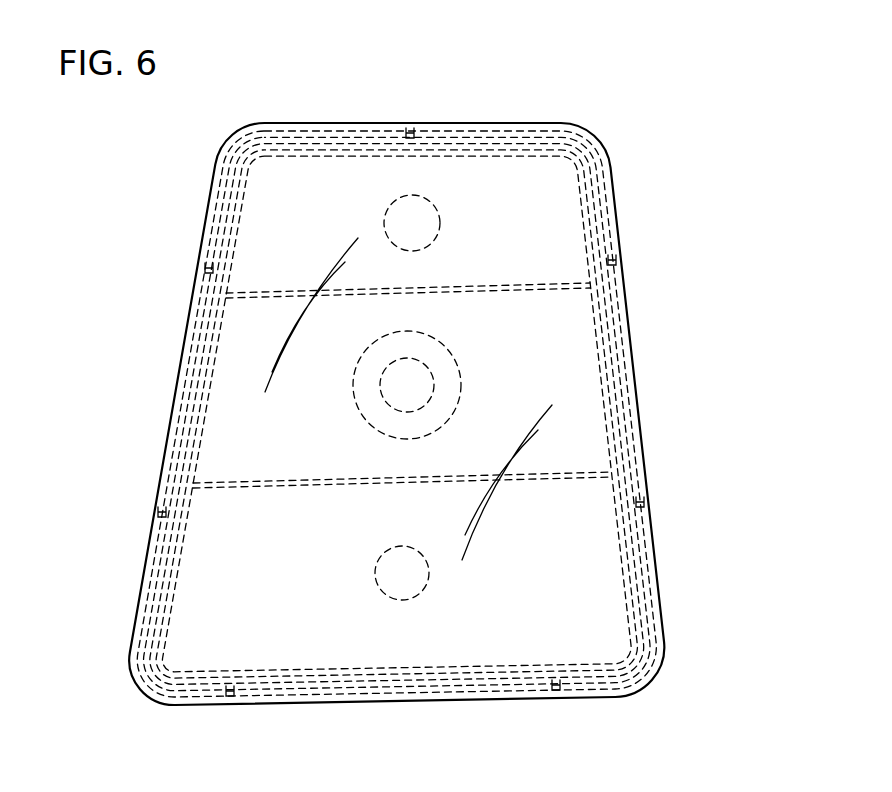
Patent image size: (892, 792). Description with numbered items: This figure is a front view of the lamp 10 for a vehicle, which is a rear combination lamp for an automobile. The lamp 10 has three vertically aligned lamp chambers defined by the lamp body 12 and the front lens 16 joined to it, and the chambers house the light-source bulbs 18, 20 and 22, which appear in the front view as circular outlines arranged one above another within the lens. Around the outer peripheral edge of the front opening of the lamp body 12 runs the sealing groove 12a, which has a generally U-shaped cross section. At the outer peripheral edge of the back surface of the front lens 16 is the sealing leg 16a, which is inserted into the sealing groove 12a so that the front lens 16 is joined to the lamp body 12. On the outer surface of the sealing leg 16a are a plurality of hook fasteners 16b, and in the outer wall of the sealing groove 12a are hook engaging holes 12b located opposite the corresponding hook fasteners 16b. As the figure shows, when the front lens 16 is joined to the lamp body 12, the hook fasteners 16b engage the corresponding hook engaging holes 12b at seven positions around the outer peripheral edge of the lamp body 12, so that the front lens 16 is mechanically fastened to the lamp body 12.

The lamp 10 is at (165, 158).
The lamp body 12 is at (182, 370).
The sealing groove 12a is at (170, 418).
The hook engaging holes 12b is at (406, 124).
The front lens 16 is at (203, 222).
The sealing leg 16a is at (165, 463).
The hook fasteners 16b is at (428, 124).
The light-source bulb 18 is at (384, 218).
The light-source bulb 20 is at (380, 400).
The light-source bulb 22 is at (378, 592).